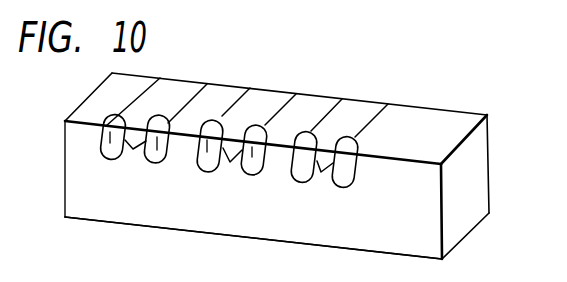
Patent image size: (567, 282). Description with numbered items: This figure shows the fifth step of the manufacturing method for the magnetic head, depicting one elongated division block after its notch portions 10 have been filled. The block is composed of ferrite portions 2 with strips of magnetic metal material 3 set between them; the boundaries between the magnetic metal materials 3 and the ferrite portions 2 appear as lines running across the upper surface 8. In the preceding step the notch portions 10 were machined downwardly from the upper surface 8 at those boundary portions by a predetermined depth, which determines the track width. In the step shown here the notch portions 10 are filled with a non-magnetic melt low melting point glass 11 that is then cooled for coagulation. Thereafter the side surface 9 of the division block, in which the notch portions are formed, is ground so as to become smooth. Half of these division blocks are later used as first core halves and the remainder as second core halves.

The ferrite portion 2 is at (479, 178).
The magnetic metal material 3 is at (182, 88).
The upper surface 8 is at (442, 122).
The side surface 9 is at (392, 248).
The notch portion 10 is at (153, 167).
The low melting point glass 11 is at (148, 117).